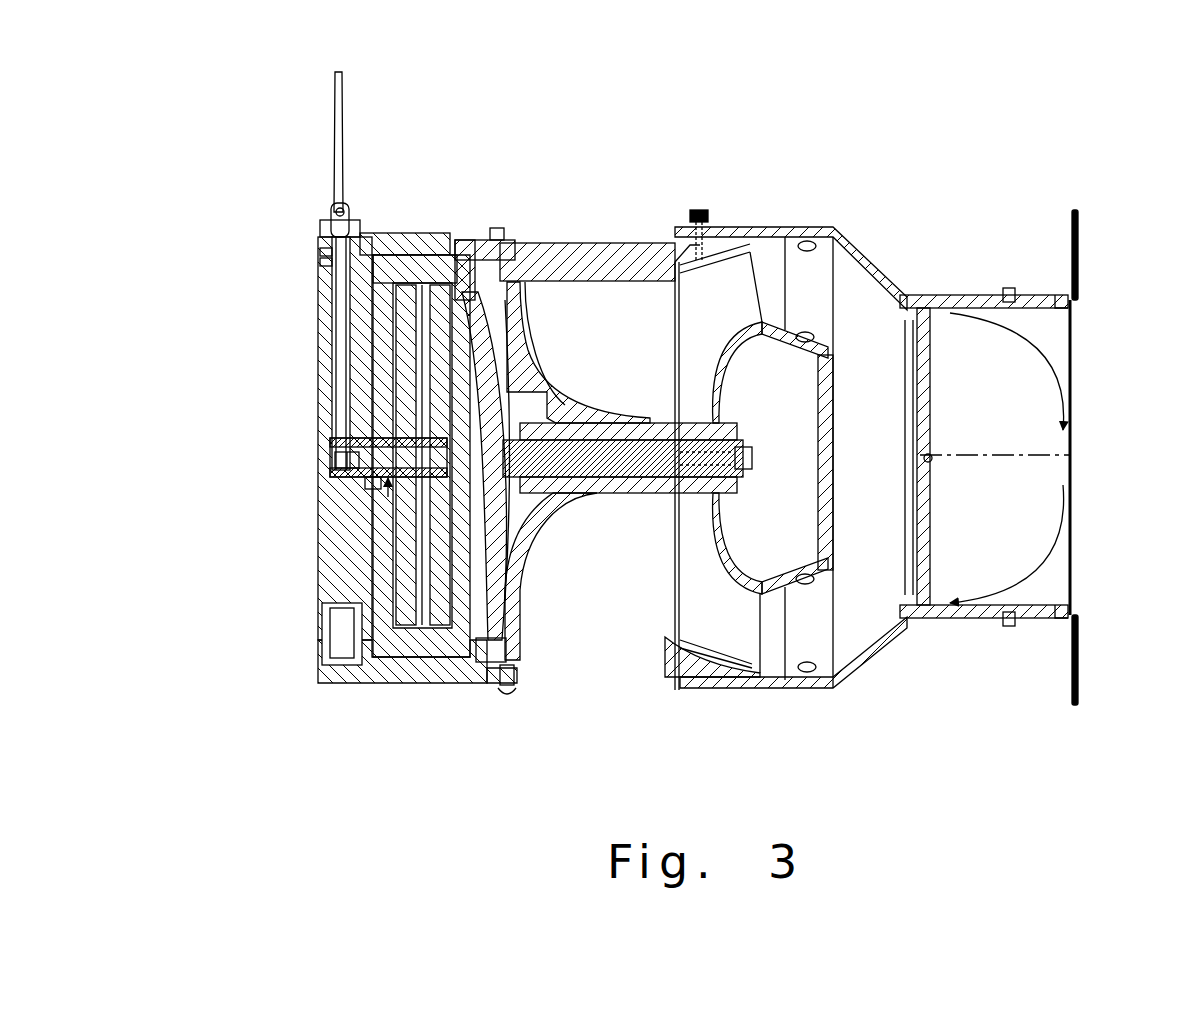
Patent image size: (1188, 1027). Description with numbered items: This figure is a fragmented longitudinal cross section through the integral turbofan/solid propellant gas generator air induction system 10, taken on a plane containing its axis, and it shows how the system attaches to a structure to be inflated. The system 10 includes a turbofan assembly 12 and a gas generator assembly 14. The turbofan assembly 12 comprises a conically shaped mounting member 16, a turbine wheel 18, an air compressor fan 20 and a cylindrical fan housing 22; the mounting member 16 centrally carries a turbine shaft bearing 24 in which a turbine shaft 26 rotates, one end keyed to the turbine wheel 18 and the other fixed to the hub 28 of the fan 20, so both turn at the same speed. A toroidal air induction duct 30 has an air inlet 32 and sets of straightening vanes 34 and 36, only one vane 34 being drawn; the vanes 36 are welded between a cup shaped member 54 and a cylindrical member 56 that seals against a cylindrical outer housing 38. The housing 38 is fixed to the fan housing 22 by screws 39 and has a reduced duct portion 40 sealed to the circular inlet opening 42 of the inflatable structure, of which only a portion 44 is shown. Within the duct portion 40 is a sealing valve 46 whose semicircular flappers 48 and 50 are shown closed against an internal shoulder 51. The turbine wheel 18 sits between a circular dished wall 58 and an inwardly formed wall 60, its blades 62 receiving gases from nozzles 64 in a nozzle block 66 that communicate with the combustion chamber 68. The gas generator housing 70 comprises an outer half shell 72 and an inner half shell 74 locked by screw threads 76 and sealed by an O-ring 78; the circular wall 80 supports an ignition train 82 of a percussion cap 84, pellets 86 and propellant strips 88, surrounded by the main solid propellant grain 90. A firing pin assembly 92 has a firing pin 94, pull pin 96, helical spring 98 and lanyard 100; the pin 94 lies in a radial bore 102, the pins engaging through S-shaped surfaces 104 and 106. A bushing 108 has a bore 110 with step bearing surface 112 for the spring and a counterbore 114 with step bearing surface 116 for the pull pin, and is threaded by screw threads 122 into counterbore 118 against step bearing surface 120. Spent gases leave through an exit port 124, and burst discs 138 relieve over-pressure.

The integral turbofan/solid propellant gas generator air induction system 10 is at (610, 195).
The turbofan assembly 12 is at (612, 237).
The gas generator assembly 14 is at (545, 170).
The mounting member 16 is at (522, 592).
The turbine wheel 18 is at (557, 380).
The air compressor fan 20 is at (698, 337).
The fan housing 22 is at (715, 245).
The turbine shaft bearing 24 is at (595, 483).
The turbine shaft 26 is at (583, 445).
The hub 28 is at (697, 490).
The air induction duct 30 is at (775, 655).
The air inlet 32 is at (662, 598).
The straightening vanes 34 is at (568, 265).
The straightening vanes 36 is at (812, 318).
The cylindrical outer housing 38 is at (822, 240).
The screws 39 is at (702, 210).
The duct portion 40 is at (940, 298).
The circular inlet opening 42 is at (1008, 290).
The portion of inflatable structure 44 is at (1082, 230).
The sealing valve 46 is at (940, 437).
The flapper 48 is at (932, 380).
The flapper 50 is at (925, 555).
The shoulder 51 is at (897, 318).
The cup shaped member 54 is at (826, 432).
The cylindrical member 56 is at (808, 240).
The circular dished wall 58 is at (498, 490).
The inwardly formed wall 60 is at (513, 570).
The turbine wheel blades 62 is at (498, 644).
The nozzles 64 is at (484, 282).
The nozzle block 66 is at (463, 677).
The combustion chamber 68 is at (467, 675).
The housing 70 is at (290, 697).
The outer half shell 72 is at (332, 673).
The inner half shell 74 is at (432, 667).
The screw threads 76 is at (417, 673).
The O-ring 78 is at (395, 667).
The circular wall 80 is at (392, 585).
The ignition train 82 is at (388, 497).
The percussion cap 84 is at (330, 445).
The boron potassium nitrate pellets 86 is at (340, 462).
The strips of solid propellant 88 is at (370, 490).
The main solid propellant grain 90 is at (410, 562).
The firing pin assembly 92 is at (314, 337).
The firing pin 94 is at (330, 380).
The pull pin 96 is at (352, 222).
The helical spring 98 is at (330, 400).
The lanyard 100 is at (342, 122).
The radial bore 102 is at (330, 355).
The S-shaped surface 104 is at (318, 262).
The S-shaped surface 106 is at (450, 243).
The bushing 108 is at (370, 235).
The bore 110 is at (318, 252).
The step bearing surface 112 is at (318, 275).
The counterbore 114 is at (357, 232).
The step bearing surface 116 is at (322, 232).
The counterbore 118 is at (322, 268).
The step bearing surface 120 is at (350, 277).
The screw threads 122 is at (322, 240).
The exit port 124 is at (497, 232).
The burst discs 138 is at (335, 612).